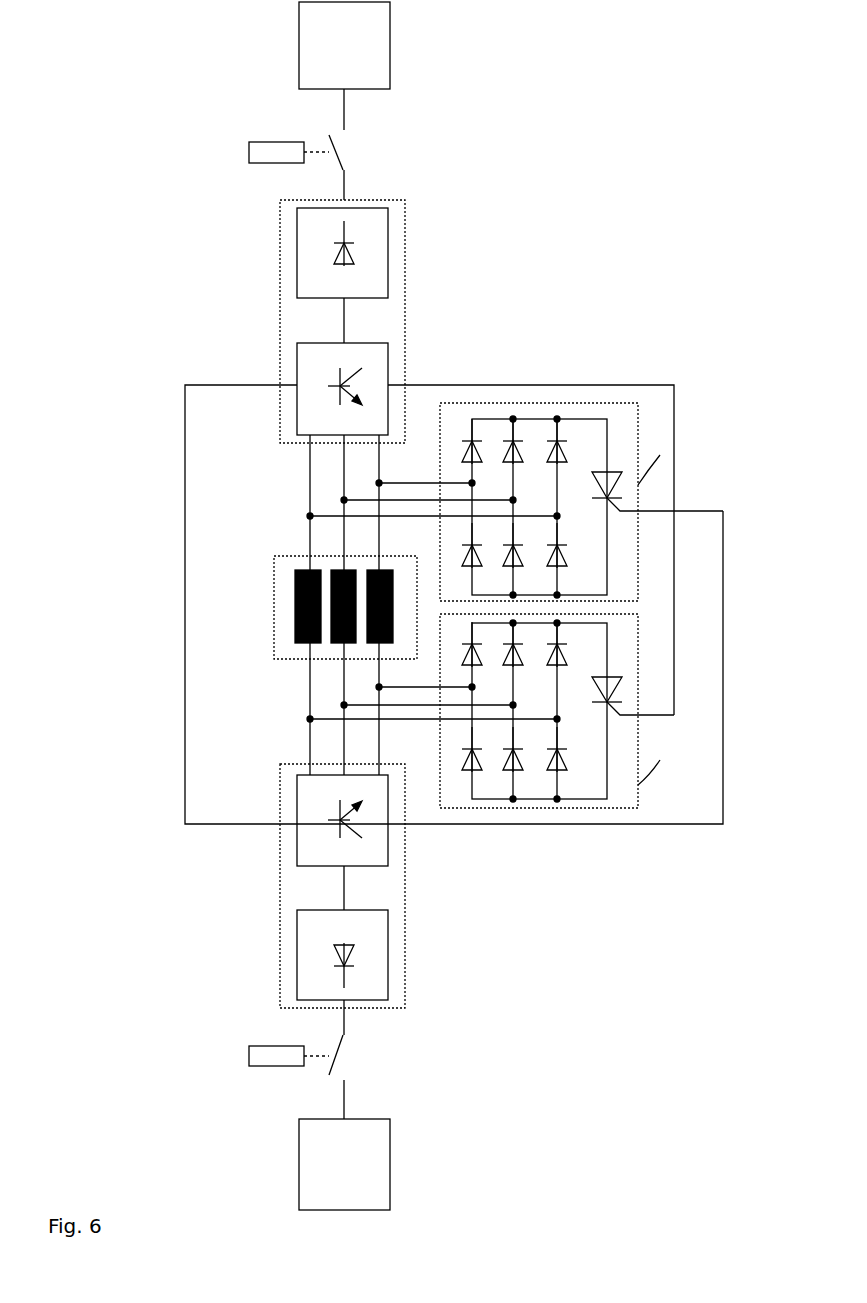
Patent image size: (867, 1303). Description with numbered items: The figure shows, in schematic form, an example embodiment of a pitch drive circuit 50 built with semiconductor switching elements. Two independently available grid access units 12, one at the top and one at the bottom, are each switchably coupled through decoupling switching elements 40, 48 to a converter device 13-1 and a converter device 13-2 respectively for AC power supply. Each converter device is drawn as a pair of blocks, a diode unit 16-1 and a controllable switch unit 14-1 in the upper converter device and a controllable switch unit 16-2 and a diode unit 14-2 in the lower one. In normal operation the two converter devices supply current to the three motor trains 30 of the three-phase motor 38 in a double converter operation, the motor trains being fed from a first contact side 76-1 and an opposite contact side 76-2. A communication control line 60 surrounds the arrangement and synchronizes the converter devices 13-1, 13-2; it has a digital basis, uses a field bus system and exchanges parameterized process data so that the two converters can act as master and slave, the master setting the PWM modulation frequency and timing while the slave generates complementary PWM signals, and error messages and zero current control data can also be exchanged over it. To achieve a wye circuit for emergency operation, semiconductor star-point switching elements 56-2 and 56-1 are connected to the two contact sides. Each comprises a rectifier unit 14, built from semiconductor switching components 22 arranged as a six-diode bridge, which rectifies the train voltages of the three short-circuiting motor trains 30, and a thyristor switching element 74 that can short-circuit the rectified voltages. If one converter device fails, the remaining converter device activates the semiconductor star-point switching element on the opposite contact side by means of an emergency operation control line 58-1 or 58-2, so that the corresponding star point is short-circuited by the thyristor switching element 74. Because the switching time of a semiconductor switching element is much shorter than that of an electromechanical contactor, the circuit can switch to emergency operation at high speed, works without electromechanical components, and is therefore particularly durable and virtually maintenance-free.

The power supply system 50 is at (522, 104).
The grid access unit 12 is at (299, 47).
The decoupling switching element 40 is at (268, 165).
The contactor 48 is at (268, 1068).
The converter device 13-1 is at (405, 262).
The first diode unit 16-1 is at (297, 265).
The first controllable switch unit 14-1 is at (297, 363).
The converter device 13-2 is at (405, 900).
The second controllable switch unit 16-2 is at (297, 850).
The second diode unit 14-2 is at (297, 935).
The communication control line 60 is at (185, 532).
The contact side 76-1 is at (310, 556).
The contact side 76-2 is at (310, 660).
The three-phase motor 38 is at (274, 632).
The motor train 30 is at (295, 620).
The emergency operation control line 58-1 is at (540, 385).
The emergency operation control line 58-2 is at (632, 748).
The semiconductor switching element 56-2 is at (638, 423).
The semiconductor switching element 56-1 is at (698, 702).
The thyristor switching element 74 is at (607, 677).
The semiconductor switching component 22 is at (515, 665).
The rectifier unit 14 is at (533, 802).